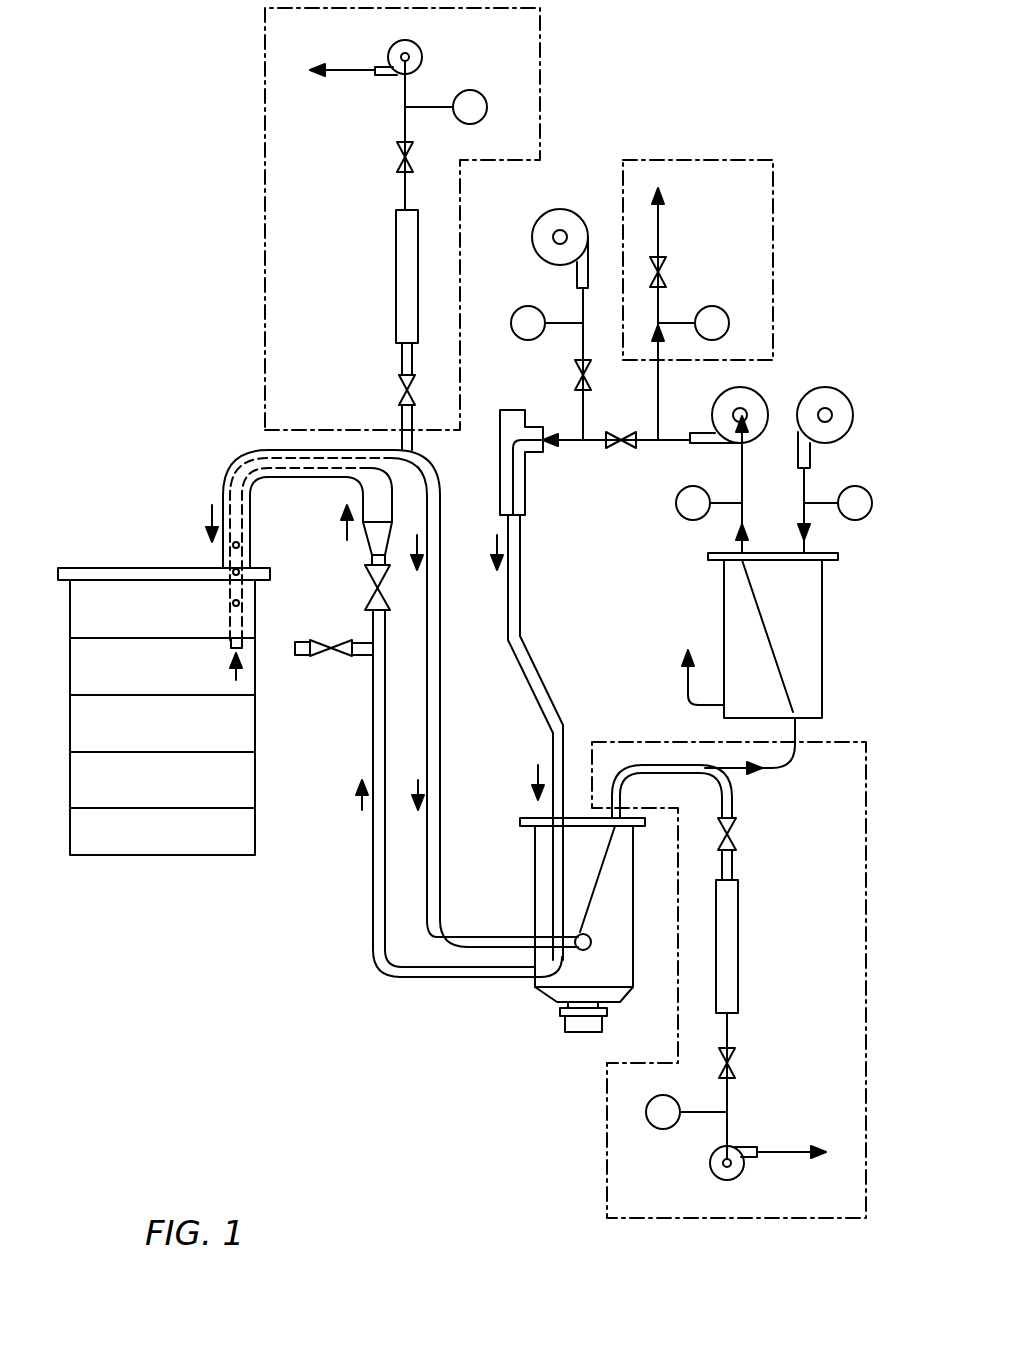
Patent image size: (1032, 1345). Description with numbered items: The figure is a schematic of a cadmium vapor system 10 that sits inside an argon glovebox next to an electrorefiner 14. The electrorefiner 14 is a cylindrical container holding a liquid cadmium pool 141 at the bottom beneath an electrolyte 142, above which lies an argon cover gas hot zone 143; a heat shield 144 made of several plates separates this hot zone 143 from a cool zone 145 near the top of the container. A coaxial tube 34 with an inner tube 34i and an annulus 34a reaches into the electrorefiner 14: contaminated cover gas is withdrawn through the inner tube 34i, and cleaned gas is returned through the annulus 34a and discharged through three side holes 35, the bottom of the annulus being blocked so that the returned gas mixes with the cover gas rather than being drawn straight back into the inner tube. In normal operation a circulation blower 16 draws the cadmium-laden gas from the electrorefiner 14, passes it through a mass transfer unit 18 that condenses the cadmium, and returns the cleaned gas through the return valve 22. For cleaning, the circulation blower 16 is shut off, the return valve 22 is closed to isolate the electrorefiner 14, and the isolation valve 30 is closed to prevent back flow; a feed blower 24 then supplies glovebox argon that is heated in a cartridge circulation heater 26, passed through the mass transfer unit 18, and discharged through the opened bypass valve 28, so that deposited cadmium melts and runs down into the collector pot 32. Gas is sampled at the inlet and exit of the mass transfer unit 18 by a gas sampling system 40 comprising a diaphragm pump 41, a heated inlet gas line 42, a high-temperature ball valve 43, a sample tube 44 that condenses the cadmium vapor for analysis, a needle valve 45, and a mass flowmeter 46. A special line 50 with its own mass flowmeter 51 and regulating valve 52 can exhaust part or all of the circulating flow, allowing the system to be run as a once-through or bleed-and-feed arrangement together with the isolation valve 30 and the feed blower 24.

The cadmium vapor system 10 is at (188, 258).
The electrorefiner 14 is at (185, 858).
The circulation blower 16 is at (755, 395).
The mass transfer unit 18 is at (548, 995).
The return valve 22 is at (372, 590).
The feed blower 24 is at (567, 208).
The cartridge circulation heater 26 is at (530, 485).
The bypass valve 28 is at (345, 660).
The isolation valve 30 is at (612, 450).
The collector pot 32 is at (575, 1032).
The coaxial tube 34 is at (223, 468).
The annulus 34a is at (237, 465).
The inner tube 34i is at (245, 448).
The side holes 35 is at (232, 603).
The gas sampling system 40 is at (265, 90).
The diaphragm pump 41 is at (390, 72).
The heated inlet gas line 42 is at (400, 415).
The high-temperature ball valve 43 is at (400, 385).
The sample tube 44 is at (396, 250).
The needle valve 45 is at (398, 152).
The mass flowmeter 46 is at (462, 90).
The special line 50 is at (770, 160).
The mass flowmeter 51 is at (715, 306).
The regulating valve 52 is at (668, 272).
The liquid cadmium pool 141 is at (130, 849).
The electrolyte 142 is at (130, 798).
The hot zone 143 is at (130, 741).
The heat shield 144 is at (130, 684).
The cool zone 145 is at (130, 626).